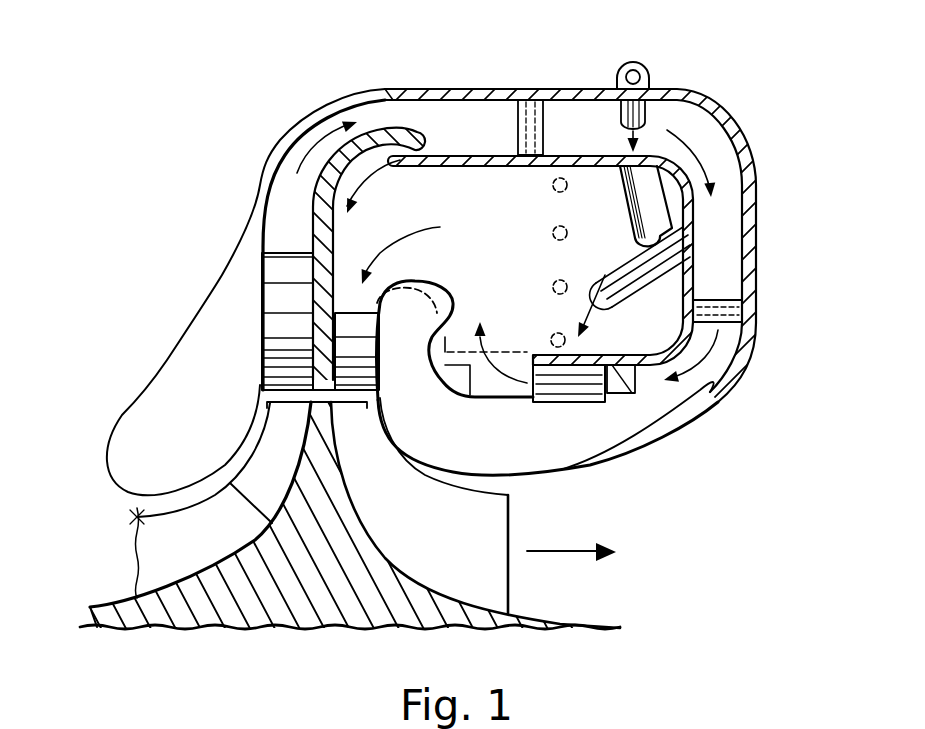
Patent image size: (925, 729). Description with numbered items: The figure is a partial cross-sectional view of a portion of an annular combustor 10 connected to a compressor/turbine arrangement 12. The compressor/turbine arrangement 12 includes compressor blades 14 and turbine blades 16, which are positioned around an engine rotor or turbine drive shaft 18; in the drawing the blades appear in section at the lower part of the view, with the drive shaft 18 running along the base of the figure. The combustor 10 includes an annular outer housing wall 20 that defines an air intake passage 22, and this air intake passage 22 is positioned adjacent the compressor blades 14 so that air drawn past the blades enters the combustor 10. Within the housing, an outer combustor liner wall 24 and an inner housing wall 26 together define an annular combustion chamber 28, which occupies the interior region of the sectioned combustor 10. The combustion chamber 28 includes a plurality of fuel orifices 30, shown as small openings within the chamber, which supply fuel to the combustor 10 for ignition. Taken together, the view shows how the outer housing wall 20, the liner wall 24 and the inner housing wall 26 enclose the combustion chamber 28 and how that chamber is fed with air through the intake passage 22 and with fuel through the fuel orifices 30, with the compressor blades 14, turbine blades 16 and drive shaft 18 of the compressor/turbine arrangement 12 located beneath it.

The combustor 10 is at (320, 90).
The compressor/turbine arrangement 12 is at (284, 634).
The compressor blades 14 is at (133, 550).
The turbine blades 16 is at (513, 521).
The turbine drive shaft 18 is at (362, 632).
The annular outer housing wall 20 is at (757, 207).
The air intake passage 22 is at (134, 520).
The outer combustor liner wall 24 is at (597, 168).
The inner housing wall 26 is at (335, 237).
The annular combustion chamber 28 is at (524, 265).
The fuel orifices 30 is at (560, 178).